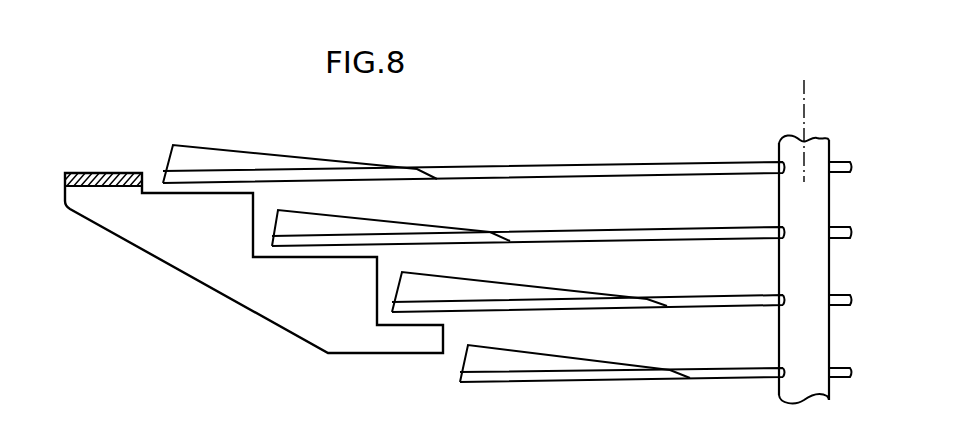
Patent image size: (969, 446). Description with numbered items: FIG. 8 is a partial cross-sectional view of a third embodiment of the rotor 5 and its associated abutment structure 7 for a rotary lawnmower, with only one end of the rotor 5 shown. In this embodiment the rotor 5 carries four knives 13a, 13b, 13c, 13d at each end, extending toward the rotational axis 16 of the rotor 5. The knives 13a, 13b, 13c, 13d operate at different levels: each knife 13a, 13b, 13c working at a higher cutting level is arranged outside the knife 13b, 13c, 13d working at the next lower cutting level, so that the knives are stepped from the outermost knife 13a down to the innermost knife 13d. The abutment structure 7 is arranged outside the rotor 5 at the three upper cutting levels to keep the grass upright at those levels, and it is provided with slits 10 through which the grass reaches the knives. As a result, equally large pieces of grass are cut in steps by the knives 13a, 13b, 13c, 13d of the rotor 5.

The rotor 5 is at (507, 234).
The abutment structure 7 is at (108, 230).
The slits 10 is at (190, 237).
The knife 13a is at (488, 175).
The knife 13b is at (513, 238).
The knife 13c is at (578, 303).
The knife 13d is at (598, 375).
The rotational axis 16 is at (800, 99).